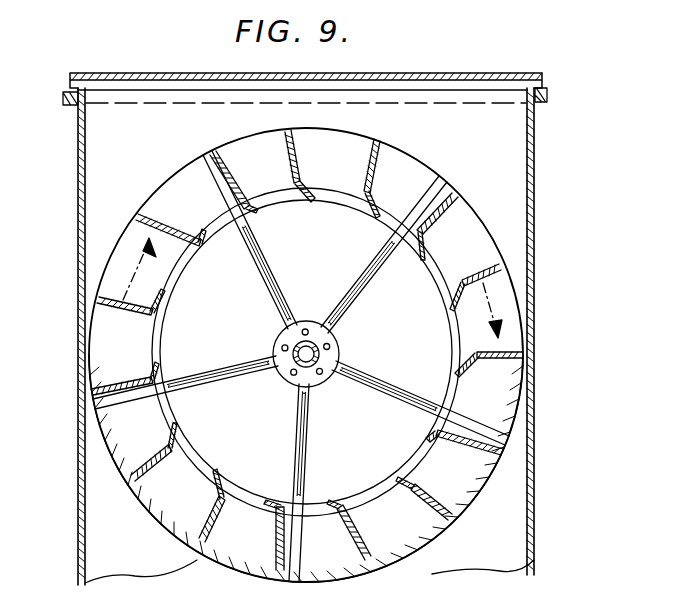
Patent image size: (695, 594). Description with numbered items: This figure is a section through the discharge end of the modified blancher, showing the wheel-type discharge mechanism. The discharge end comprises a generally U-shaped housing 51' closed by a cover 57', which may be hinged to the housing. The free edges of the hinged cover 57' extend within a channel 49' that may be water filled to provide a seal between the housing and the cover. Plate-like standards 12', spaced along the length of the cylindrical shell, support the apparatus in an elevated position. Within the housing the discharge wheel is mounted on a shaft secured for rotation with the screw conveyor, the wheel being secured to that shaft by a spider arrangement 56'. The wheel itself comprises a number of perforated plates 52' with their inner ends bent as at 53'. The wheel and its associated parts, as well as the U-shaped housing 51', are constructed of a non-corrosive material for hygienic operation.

The cover 57' is at (306, 71).
The channel 49' is at (307, 108).
The U-shaped housing 51' is at (298, 336).
The plate-like standards 12' is at (336, 355).
The plates 52' is at (306, 344).
The bent inner ends 53' is at (326, 325).
The spider arrangement 56' is at (301, 366).